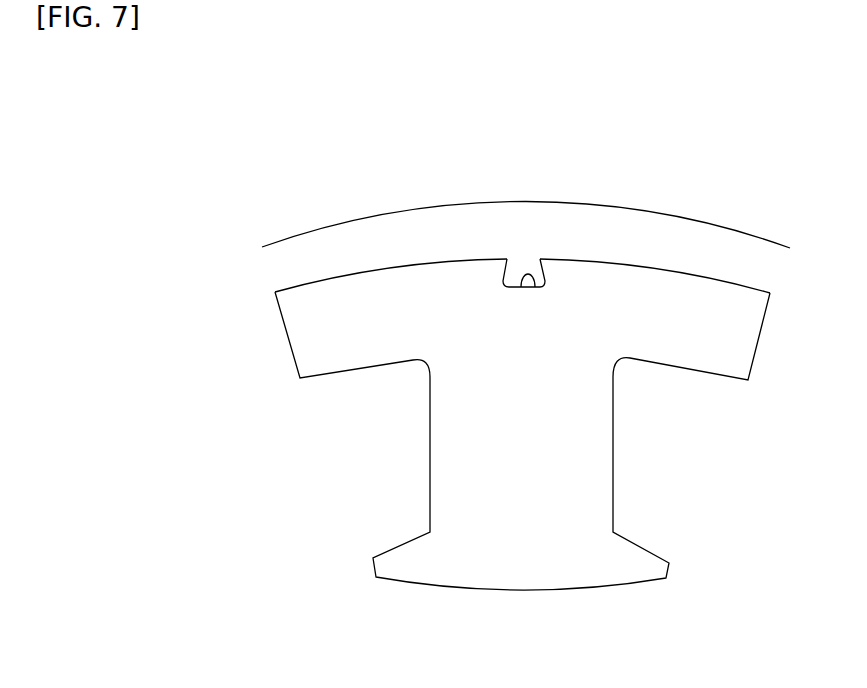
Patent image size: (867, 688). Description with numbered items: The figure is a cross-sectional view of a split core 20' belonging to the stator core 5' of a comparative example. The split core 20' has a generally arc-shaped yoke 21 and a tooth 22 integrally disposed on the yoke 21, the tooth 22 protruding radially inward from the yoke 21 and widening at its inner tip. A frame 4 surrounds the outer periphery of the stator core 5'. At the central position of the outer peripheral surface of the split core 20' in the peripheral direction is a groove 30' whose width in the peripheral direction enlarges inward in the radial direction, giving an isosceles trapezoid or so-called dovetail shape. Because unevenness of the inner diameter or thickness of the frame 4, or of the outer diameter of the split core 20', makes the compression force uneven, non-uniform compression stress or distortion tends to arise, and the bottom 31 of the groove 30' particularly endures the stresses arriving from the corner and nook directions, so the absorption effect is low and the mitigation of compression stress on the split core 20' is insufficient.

The frame 4 is at (683, 247).
The stator core 5' is at (391, 219).
The split core 20' is at (655, 233).
The yoke 21 is at (330, 320).
The tooth 22 is at (512, 462).
The groove 30' is at (524, 224).
The bottom 31 is at (533, 287).